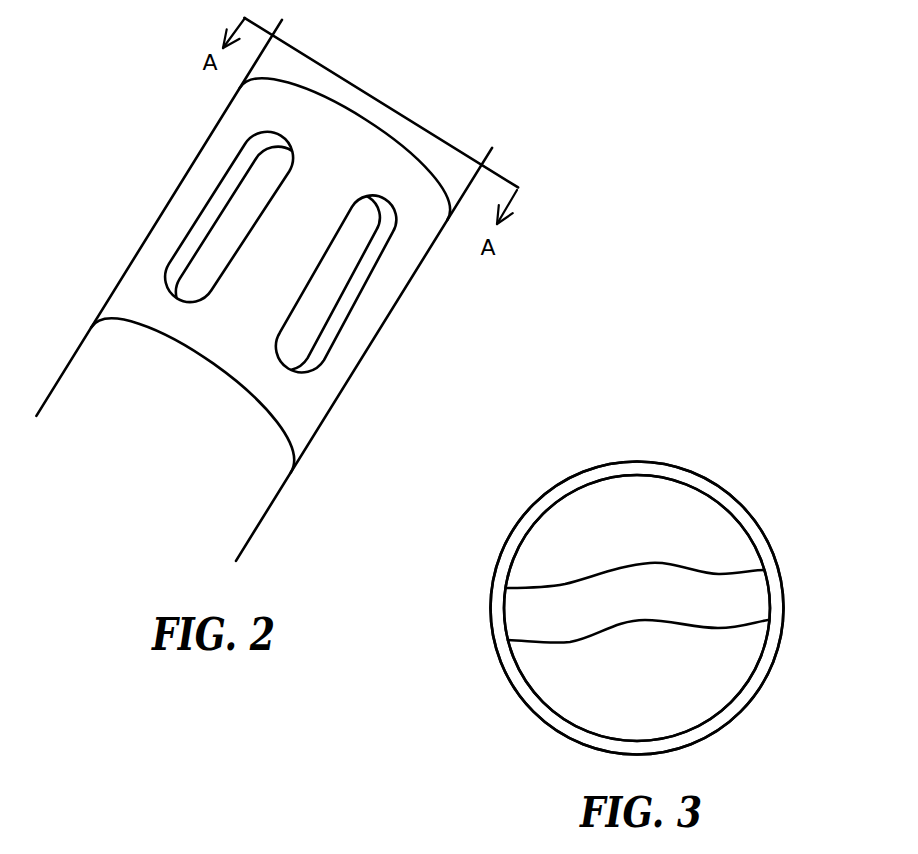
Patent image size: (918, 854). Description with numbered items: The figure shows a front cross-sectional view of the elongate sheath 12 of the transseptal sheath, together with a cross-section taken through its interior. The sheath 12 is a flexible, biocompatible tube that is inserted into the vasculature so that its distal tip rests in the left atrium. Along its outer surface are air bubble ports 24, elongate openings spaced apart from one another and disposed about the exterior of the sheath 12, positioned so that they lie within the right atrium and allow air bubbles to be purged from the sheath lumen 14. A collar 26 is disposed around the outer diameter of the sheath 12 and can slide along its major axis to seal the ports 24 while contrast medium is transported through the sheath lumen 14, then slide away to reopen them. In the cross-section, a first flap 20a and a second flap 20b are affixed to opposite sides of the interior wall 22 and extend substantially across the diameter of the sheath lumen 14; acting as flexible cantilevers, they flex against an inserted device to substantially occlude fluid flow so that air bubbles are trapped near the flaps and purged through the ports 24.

In FIG. 2, the sheath 12 is at (276, 527).
In FIG. 3, the sheath 12 is at (726, 725).
In FIG. 3, the sheath lumen 14 is at (748, 492).
In FIG. 3, the first flap 20a is at (550, 588).
In FIG. 3, the second flap 20b is at (552, 643).
In FIG. 3, the interior wall 22 is at (592, 735).
In FIG. 2, the air bubble ports 24 is at (232, 240).
In FIG. 2, the collar 26 is at (354, 399).